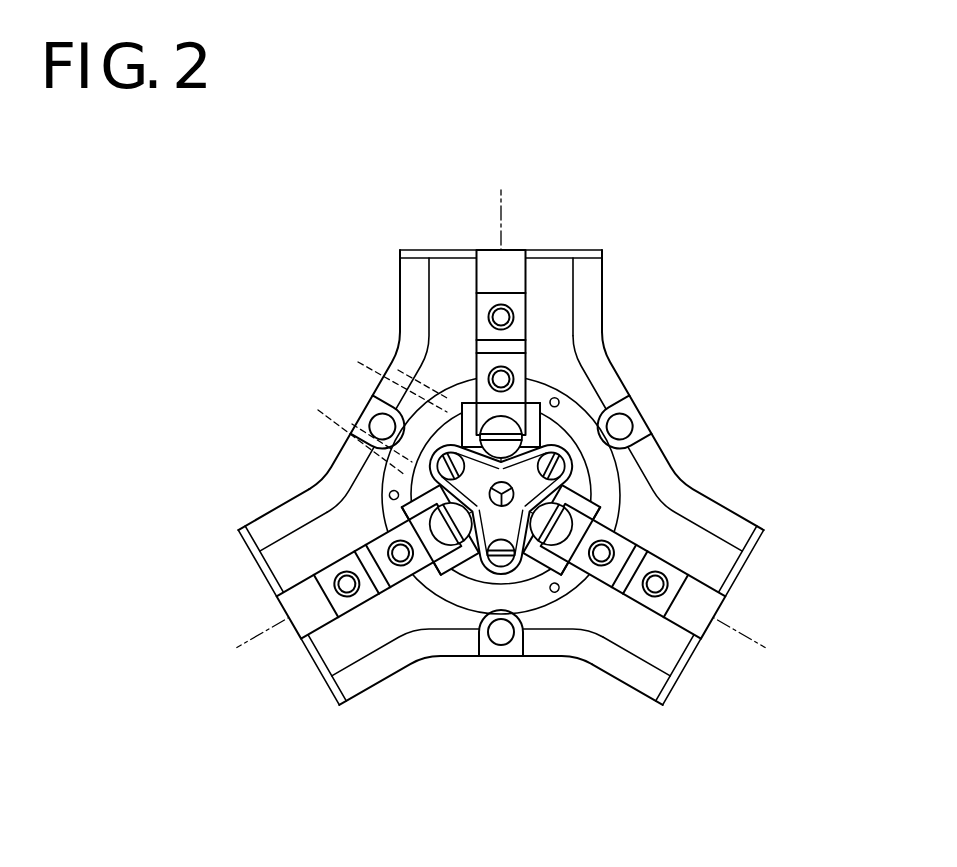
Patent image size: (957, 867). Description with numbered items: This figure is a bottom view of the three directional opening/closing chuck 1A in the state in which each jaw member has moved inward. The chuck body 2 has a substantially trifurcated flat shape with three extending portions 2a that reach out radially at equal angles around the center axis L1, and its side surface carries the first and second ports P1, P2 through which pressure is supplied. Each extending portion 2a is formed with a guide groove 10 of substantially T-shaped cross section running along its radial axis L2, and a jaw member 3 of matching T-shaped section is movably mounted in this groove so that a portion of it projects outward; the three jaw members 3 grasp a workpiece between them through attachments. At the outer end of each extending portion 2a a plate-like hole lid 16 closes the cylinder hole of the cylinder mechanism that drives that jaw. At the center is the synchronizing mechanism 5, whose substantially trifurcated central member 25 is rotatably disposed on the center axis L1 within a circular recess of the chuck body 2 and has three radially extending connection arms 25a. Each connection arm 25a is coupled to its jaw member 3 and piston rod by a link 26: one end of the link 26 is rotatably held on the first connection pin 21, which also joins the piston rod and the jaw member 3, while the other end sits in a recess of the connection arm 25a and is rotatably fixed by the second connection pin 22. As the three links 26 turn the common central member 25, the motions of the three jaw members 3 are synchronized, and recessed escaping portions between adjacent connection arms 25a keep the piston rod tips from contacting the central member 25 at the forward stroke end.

The chuck 1A is at (651, 204).
The chuck body 2 is at (608, 386).
The extending portion 2a is at (544, 254).
The jaw member 3 is at (488, 252).
The synchronizing mechanism 5 is at (597, 490).
The guide groove 10 is at (485, 316).
The hole lid 16 is at (585, 250).
The first connection pin 21 is at (450, 538).
The second connection pin 22 is at (502, 575).
The central member 25 is at (566, 446).
The connection arm 25a is at (590, 452).
The link 26 is at (480, 548).
The center axis L1 is at (540, 478).
The radial axis L2 is at (510, 416).
The first port P1 is at (351, 434).
The second port P2 is at (387, 378).